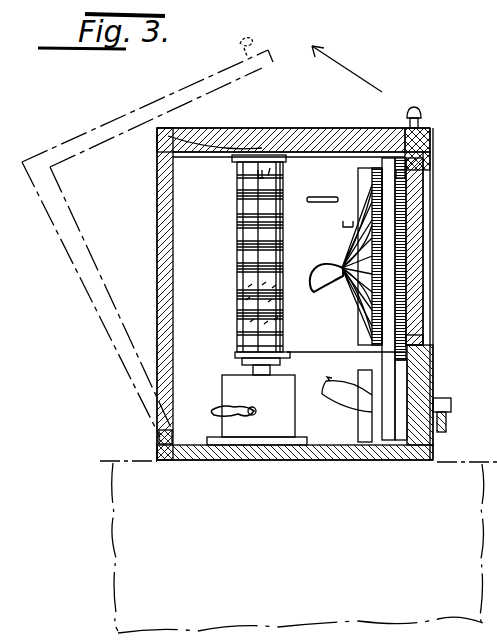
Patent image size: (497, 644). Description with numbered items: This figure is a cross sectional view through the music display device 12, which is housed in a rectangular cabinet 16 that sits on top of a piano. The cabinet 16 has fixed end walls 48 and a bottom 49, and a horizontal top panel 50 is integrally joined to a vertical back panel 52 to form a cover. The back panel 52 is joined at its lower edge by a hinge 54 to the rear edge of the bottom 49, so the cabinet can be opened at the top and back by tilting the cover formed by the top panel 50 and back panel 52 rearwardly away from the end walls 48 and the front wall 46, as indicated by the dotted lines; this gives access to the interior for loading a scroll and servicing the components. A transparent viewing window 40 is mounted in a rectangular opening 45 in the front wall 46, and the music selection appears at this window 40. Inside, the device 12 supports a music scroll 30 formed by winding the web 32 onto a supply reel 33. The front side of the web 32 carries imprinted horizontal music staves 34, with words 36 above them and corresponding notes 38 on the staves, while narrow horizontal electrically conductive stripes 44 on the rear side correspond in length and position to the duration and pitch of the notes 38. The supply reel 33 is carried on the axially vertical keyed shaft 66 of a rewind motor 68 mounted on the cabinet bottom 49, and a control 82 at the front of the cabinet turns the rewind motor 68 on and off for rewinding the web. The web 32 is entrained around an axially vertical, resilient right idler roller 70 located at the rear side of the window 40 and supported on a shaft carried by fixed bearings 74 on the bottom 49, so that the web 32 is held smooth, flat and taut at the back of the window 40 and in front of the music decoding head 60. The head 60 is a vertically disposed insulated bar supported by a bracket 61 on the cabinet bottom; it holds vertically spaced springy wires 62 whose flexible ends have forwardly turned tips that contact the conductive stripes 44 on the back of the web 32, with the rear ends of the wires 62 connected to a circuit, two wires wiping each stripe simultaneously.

The music display device 12 is at (438, 239).
The rectangular cabinet 16 is at (192, 428).
The music scroll 30 is at (240, 241).
The web 32 is at (322, 157).
The supply reel 33 is at (244, 156).
The music staves 34 is at (240, 316).
The words 36 is at (258, 174).
The notes 38 is at (240, 283).
The transparent viewing window 40 is at (417, 266).
The electrically conductive stripes 44 is at (322, 262).
The rectangular opening 45 is at (417, 341).
The front wall 46 is at (418, 383).
The end walls 48 is at (333, 428).
The bottom 49 is at (362, 425).
The horizontal top panel 50 is at (222, 151).
The vertical back panel 52 is at (163, 198).
The hinge 54 is at (160, 436).
The music decoding head 60 is at (386, 188).
The bracket 61 is at (388, 428).
The springy wires 62 is at (408, 285).
The keyed shaft 66 is at (318, 354).
The rewind motor 68 is at (263, 427).
The right idler roller 70 is at (368, 172).
The fixed bearings 74 is at (362, 428).
The control 82 is at (447, 425).